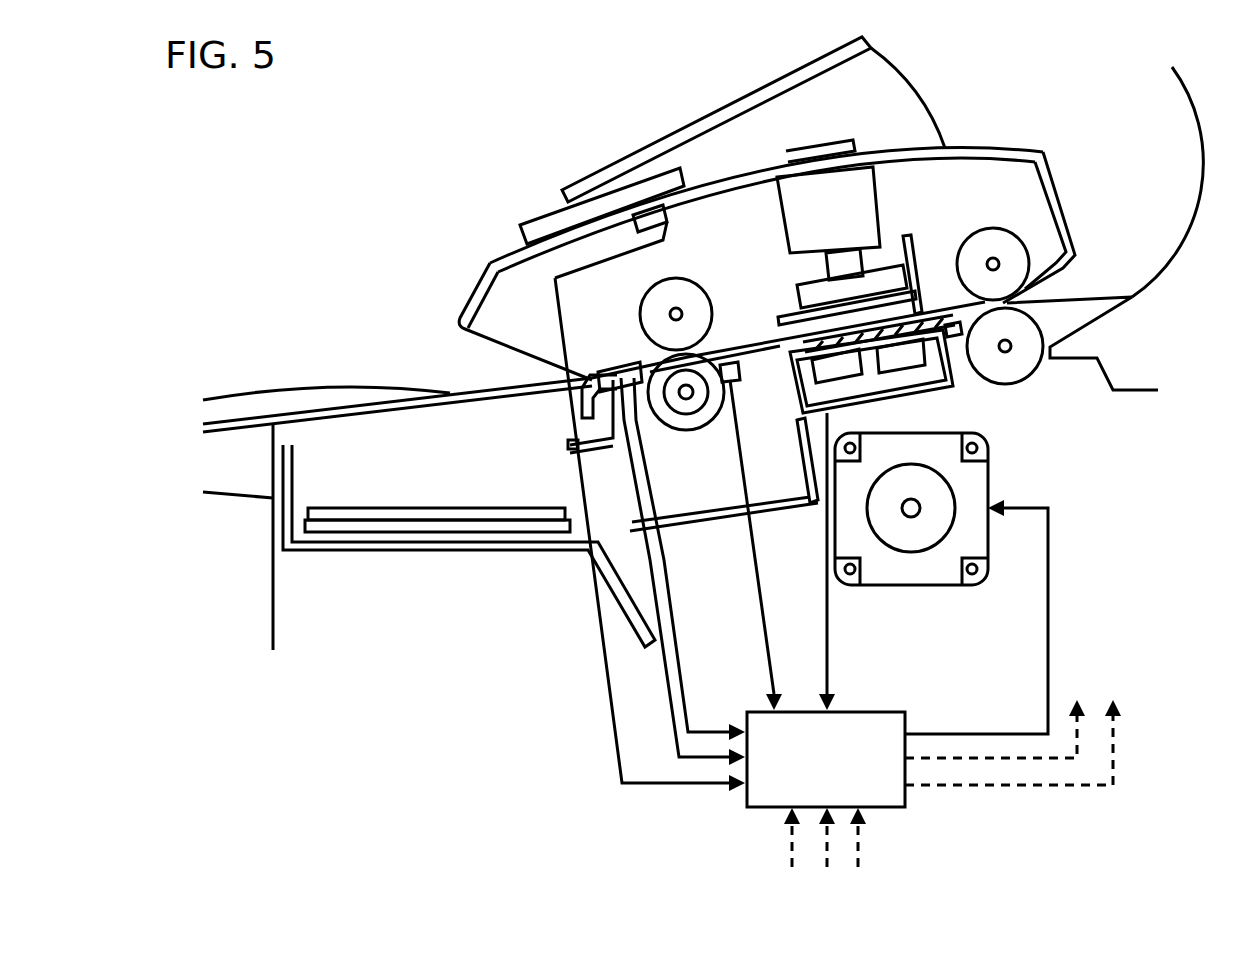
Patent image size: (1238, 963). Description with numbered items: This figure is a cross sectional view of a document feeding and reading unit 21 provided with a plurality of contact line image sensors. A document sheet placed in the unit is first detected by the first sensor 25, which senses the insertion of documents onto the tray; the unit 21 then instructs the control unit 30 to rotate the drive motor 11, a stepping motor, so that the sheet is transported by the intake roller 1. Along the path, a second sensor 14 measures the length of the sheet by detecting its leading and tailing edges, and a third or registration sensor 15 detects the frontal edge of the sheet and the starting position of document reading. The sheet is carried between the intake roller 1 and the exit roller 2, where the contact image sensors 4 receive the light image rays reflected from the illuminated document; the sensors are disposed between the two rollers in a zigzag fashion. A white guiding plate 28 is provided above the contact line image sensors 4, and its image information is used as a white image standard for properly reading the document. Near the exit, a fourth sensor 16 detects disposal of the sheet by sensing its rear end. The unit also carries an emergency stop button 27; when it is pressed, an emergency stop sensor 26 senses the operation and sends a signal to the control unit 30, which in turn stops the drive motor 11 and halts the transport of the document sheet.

The document feeding and reading unit 21 is at (437, 162).
The emergency stop button 27 is at (675, 180).
The emergency stop sensor 26 is at (667, 212).
The white guiding plate 28 is at (807, 303).
The fourth sensor 16 is at (957, 303).
The exit roller 2 is at (1032, 367).
The first sensor 25 is at (617, 362).
The second sensor 14 is at (640, 353).
The intake roller 1 is at (690, 432).
The third or registration sensor 15 is at (740, 372).
The contact image sensor 4 is at (852, 382).
The drive motor 11 is at (908, 586).
The control unit 30 is at (876, 712).